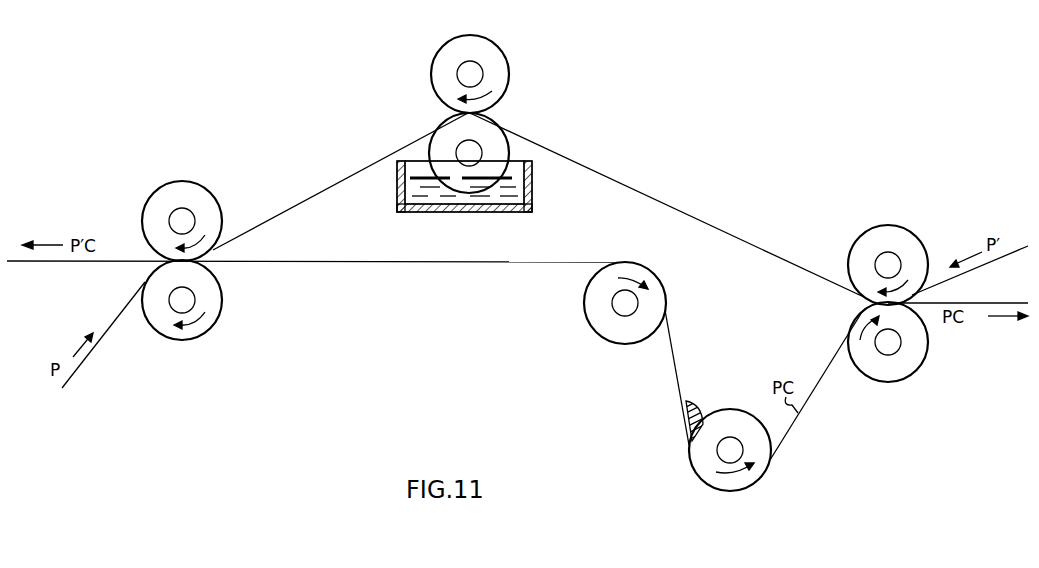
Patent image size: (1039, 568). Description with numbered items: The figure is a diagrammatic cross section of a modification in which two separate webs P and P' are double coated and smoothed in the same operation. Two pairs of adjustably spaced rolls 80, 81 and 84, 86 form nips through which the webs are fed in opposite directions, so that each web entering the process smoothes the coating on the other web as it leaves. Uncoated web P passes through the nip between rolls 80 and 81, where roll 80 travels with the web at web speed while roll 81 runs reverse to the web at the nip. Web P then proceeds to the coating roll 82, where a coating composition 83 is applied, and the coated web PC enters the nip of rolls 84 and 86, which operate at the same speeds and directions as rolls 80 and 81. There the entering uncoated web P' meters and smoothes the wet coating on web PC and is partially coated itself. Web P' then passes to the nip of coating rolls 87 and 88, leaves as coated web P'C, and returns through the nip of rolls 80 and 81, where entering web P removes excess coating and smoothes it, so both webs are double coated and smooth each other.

The roll 80 is at (212, 310).
The roll 81 is at (148, 213).
The coating roll 82 is at (753, 470).
The coating composition 83 is at (698, 407).
The roll 84 is at (903, 372).
The roll 86 is at (862, 243).
The coating roll 87 is at (497, 148).
The coating roll 88 is at (497, 88).